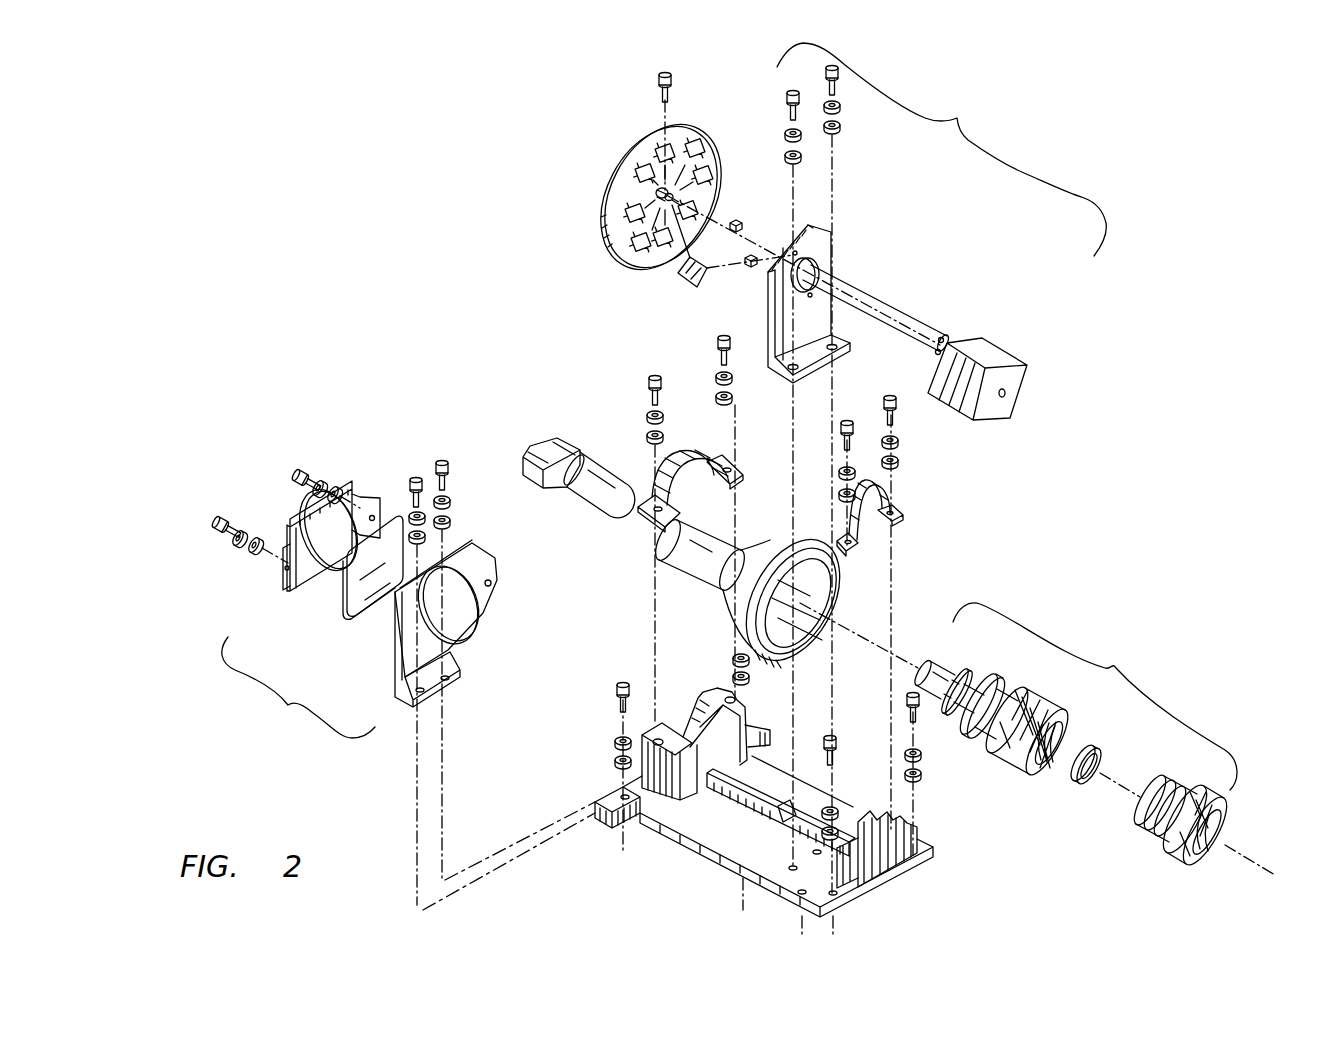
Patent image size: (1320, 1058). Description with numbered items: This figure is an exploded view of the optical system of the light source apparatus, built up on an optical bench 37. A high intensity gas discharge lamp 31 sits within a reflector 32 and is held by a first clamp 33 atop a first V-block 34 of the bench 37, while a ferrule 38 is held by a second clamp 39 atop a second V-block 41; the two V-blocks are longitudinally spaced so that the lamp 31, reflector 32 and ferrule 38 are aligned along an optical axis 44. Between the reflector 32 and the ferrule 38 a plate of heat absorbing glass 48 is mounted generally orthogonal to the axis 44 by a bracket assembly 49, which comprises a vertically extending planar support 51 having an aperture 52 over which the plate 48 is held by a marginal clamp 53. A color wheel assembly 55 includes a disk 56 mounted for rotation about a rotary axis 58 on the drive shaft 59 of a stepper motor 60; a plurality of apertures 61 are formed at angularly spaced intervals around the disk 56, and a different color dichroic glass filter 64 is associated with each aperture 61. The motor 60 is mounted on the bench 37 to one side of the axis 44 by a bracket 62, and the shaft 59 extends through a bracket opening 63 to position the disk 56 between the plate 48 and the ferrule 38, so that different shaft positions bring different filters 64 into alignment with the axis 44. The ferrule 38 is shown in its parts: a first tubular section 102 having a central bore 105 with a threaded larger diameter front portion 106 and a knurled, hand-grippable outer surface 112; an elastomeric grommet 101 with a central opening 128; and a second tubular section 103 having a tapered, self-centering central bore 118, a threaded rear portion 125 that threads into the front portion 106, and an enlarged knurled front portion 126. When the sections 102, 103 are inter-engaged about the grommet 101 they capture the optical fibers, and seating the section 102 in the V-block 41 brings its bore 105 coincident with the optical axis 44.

The gas discharge lamp 31 is at (592, 493).
The reflector 32 is at (722, 570).
The first clamp 33 is at (685, 455).
The first V-block 34 is at (723, 753).
The optical bench 37 is at (712, 832).
The ferrule 38 is at (1095, 696).
The second clamp 39 is at (890, 492).
The second V-block 41 is at (919, 830).
The optical axis 44 is at (1257, 857).
The plate of heat absorbing glass 48 is at (365, 597).
The bracket assembly 49 is at (298, 687).
The planar support 51 is at (655, 195).
The aperture 52 is at (487, 590).
The marginal clamp 53 is at (343, 490).
The color wheel assembly 55 is at (941, 149).
The disk 56 is at (636, 158).
The rotary axis 58 is at (903, 330).
The drive shaft 59 is at (932, 354).
The stepper motor 60 is at (1015, 377).
The apertures 61 is at (628, 256).
The bracket 62 is at (820, 245).
The bracket opening 63 is at (810, 272).
The dichroic glass filter 64 is at (688, 284).
The grommet 101 is at (1073, 775).
The tubular section 102 is at (1012, 708).
The tubular section 103 is at (1165, 790).
The central bore 105 is at (1063, 737).
The front portion 106 is at (1052, 773).
The knurled outer surface 112 is at (1033, 710).
The central bore 118 is at (1197, 860).
The rear portion 125 is at (1163, 813).
The front portion 126 is at (1213, 797).
The central opening 128 is at (1093, 782).